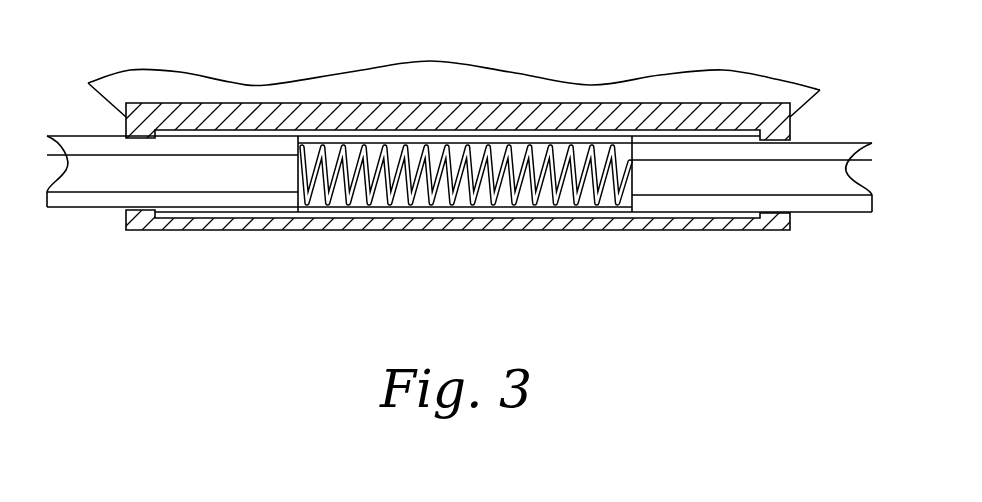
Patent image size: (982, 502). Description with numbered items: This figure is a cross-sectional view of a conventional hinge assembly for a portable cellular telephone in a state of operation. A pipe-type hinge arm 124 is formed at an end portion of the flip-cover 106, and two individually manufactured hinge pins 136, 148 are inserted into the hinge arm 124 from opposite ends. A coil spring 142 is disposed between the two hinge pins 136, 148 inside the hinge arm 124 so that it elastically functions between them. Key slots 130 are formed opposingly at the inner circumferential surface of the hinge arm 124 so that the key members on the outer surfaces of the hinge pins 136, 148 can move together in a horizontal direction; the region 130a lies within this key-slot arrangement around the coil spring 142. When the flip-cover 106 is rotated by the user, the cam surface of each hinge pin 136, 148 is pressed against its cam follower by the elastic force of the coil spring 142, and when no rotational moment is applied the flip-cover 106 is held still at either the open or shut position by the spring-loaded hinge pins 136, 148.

The flip-cover 106 is at (445, 78).
The key slots 130 is at (230, 112).
The bushing bore 130a is at (525, 150).
The pipe-type hinge arm 124 is at (387, 225).
The hinge pin 136 is at (83, 202).
The hinge pin 148 is at (823, 205).
The coil spring 142 is at (518, 195).